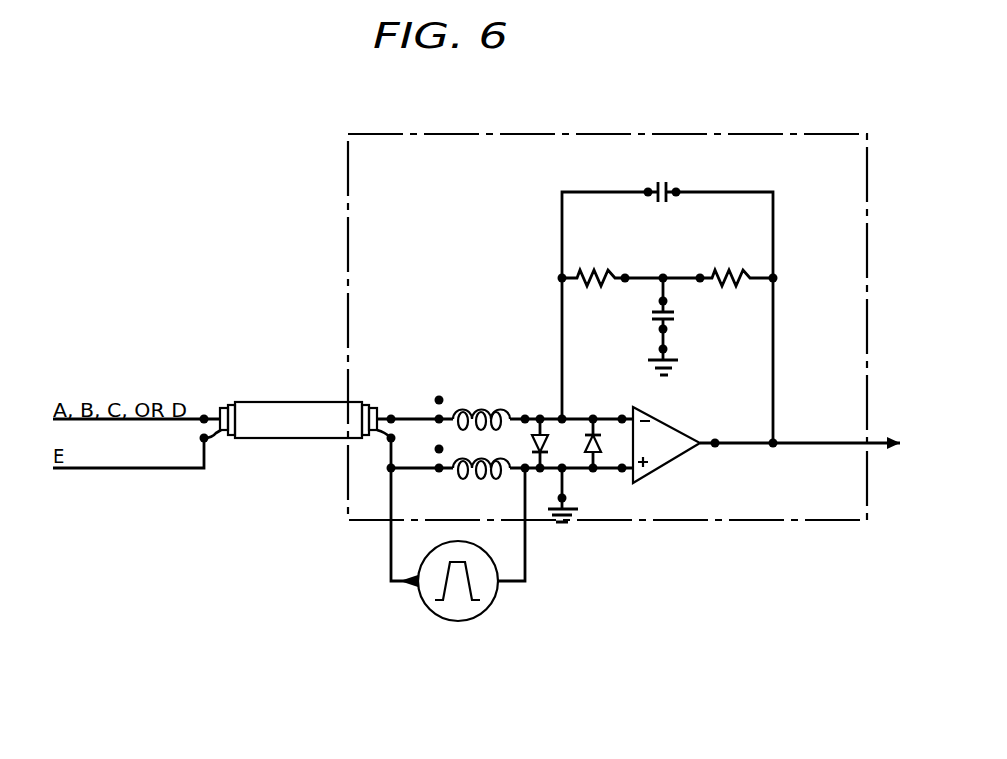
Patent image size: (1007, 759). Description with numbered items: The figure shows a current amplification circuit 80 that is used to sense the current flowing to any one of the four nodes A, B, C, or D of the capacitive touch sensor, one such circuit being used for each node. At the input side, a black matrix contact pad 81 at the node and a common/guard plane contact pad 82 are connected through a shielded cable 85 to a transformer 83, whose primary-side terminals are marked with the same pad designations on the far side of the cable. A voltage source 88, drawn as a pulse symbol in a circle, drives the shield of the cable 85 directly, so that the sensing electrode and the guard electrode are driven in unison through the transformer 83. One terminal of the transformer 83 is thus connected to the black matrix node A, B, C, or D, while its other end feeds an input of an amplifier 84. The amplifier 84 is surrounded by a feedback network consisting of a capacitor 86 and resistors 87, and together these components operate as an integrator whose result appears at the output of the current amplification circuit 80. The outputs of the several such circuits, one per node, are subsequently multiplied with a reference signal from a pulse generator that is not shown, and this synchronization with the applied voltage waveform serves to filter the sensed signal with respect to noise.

The current amplification circuit 80 is at (213, 126).
The black matrix contact pad 81 is at (204, 415).
The common/guard plane contact pad 82 is at (207, 441).
The transformer 83 is at (486, 460).
The amplifier 84 is at (670, 424).
The shielded cable 85 is at (264, 401).
The capacitor 86 is at (661, 181).
The resistors 87 is at (722, 270).
The voltage source 88 is at (487, 607).